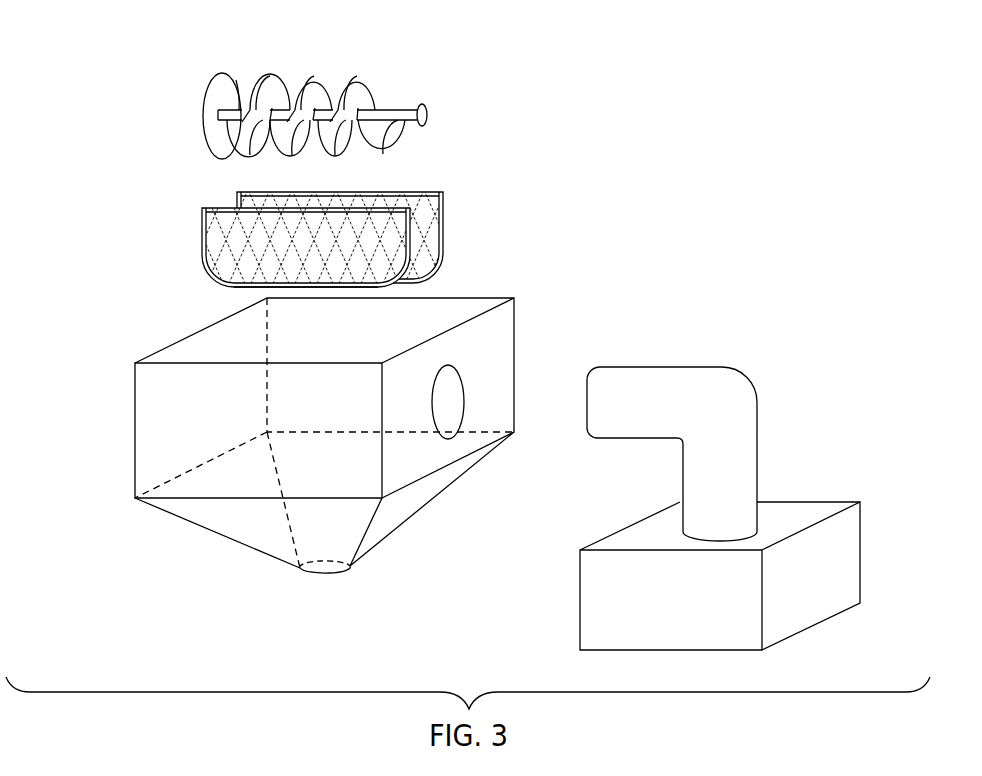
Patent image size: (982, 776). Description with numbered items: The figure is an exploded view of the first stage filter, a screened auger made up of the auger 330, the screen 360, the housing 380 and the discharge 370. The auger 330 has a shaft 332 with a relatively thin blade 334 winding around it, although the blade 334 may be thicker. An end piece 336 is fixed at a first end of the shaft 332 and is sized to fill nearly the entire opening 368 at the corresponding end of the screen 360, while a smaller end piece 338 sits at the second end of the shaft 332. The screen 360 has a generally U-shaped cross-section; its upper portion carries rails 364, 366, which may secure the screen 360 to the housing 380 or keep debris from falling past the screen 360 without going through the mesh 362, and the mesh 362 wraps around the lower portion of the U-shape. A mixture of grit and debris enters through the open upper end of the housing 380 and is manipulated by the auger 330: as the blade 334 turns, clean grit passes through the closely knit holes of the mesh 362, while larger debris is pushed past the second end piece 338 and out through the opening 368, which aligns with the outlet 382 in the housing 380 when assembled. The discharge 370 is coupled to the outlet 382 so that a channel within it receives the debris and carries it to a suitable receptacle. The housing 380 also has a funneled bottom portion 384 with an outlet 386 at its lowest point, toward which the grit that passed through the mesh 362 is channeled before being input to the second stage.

The auger 330 is at (178, 112).
The shaft 332 is at (292, 108).
The blade 334 is at (370, 82).
The end piece 336 is at (220, 82).
The second end piece 338 is at (428, 107).
The screen 360 is at (172, 240).
The mesh 362 is at (238, 287).
The rail 364 is at (428, 190).
The rail 366 is at (216, 207).
The opening 368 is at (418, 240).
The discharge 370 is at (695, 366).
The housing 380 is at (135, 432).
The outlet 382 is at (448, 397).
The funneled bottom portion 384 is at (225, 515).
The outlet 386 is at (318, 573).